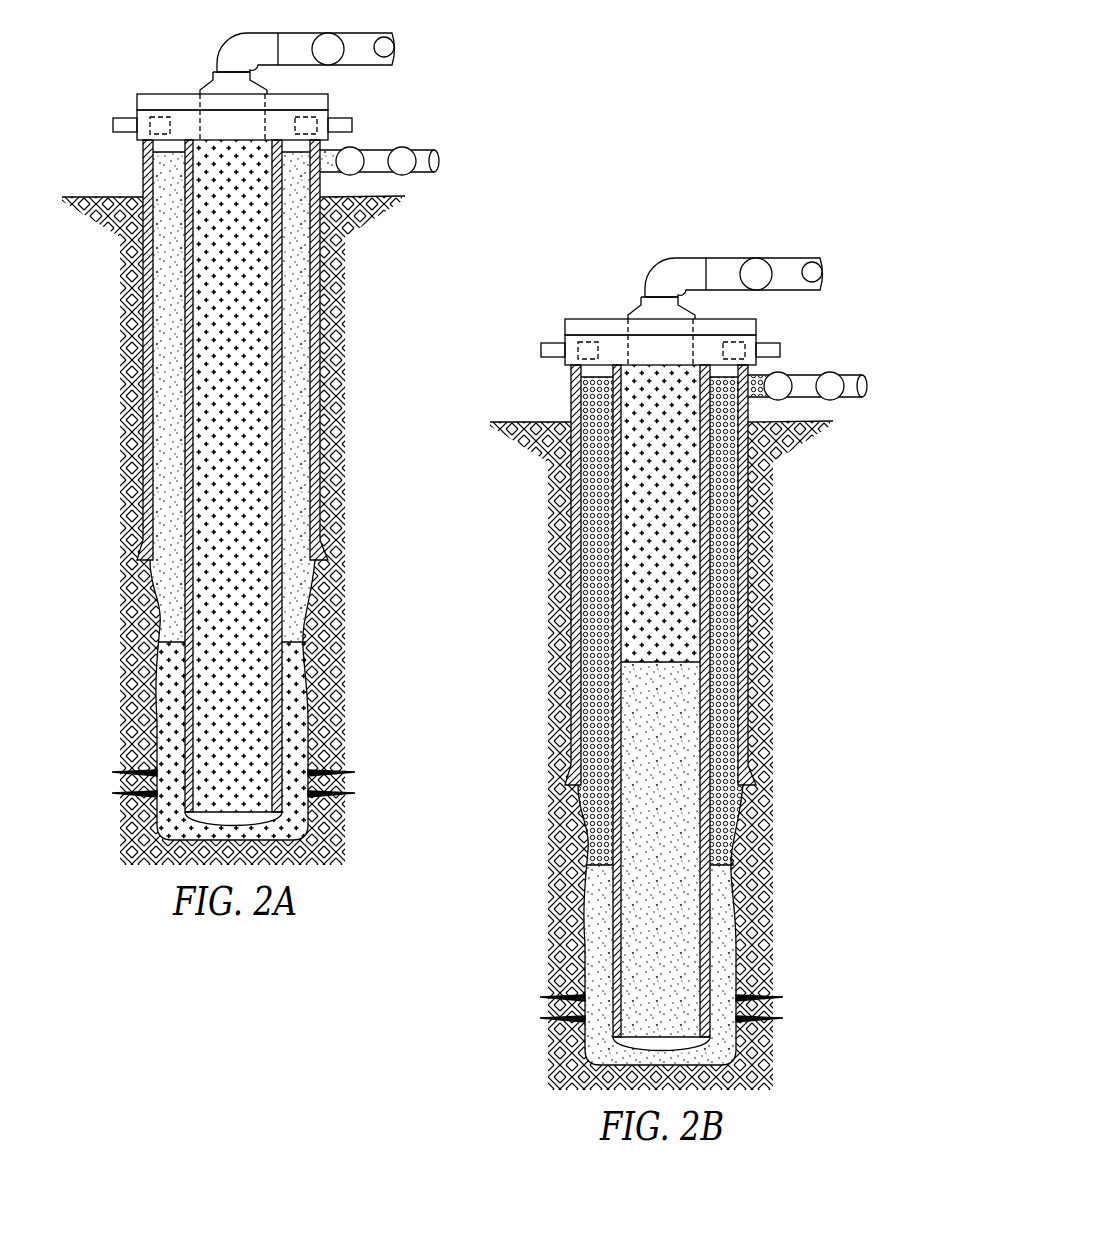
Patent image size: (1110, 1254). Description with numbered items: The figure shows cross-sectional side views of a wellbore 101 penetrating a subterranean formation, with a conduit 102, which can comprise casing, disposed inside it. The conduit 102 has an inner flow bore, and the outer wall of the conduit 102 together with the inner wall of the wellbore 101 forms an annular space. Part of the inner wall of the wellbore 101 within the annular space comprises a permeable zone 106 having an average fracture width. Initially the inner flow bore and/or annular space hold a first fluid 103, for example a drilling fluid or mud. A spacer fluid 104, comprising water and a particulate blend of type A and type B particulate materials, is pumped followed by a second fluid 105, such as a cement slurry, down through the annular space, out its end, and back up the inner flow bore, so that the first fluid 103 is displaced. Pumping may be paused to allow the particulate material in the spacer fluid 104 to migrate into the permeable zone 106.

In FIG. 2A, the wellbore 101 is at (147, 423).
In FIG. 2B, the wellbore 101 is at (626, 575).
In FIG. 2A, the conduit 102 is at (169, 470).
In FIG. 2B, the conduit 102 is at (611, 708).
In FIG. 2A, the first fluid 103 is at (242, 402).
In FIG. 2B, the first fluid 103 is at (726, 513).
In FIG. 2A, the spacer fluid 104 is at (306, 265).
In FIG. 2B, the spacer fluid 104 is at (705, 863).
In FIG. 2B, the second fluid 105 is at (706, 621).
In FIG. 2A, the permeable zone 106 is at (105, 765).
In FIG. 2B, the permeable zone 106 is at (663, 1010).